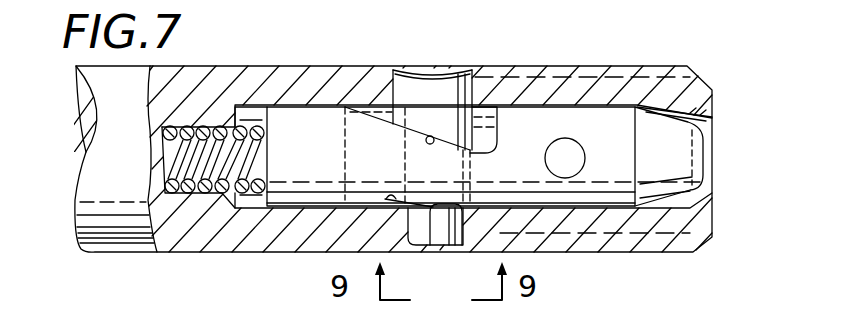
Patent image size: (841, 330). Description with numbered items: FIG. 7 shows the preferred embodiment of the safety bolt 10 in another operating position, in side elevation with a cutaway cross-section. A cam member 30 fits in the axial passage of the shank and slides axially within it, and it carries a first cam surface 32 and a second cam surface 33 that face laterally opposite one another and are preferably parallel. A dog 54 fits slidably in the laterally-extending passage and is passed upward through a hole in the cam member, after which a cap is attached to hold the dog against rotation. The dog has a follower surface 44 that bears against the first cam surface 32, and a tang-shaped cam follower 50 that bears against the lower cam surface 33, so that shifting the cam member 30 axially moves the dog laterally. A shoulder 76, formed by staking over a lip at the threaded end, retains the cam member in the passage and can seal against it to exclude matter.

The valve assembly 10 is at (293, 60).
The cam member 30 is at (690, 140).
The first cam surface 32 is at (378, 100).
The second cam surface 33 is at (390, 200).
The follower surface 44 is at (430, 134).
The cam follower 50 is at (455, 230).
The dog 54 is at (462, 62).
The shoulder 76 is at (712, 118).